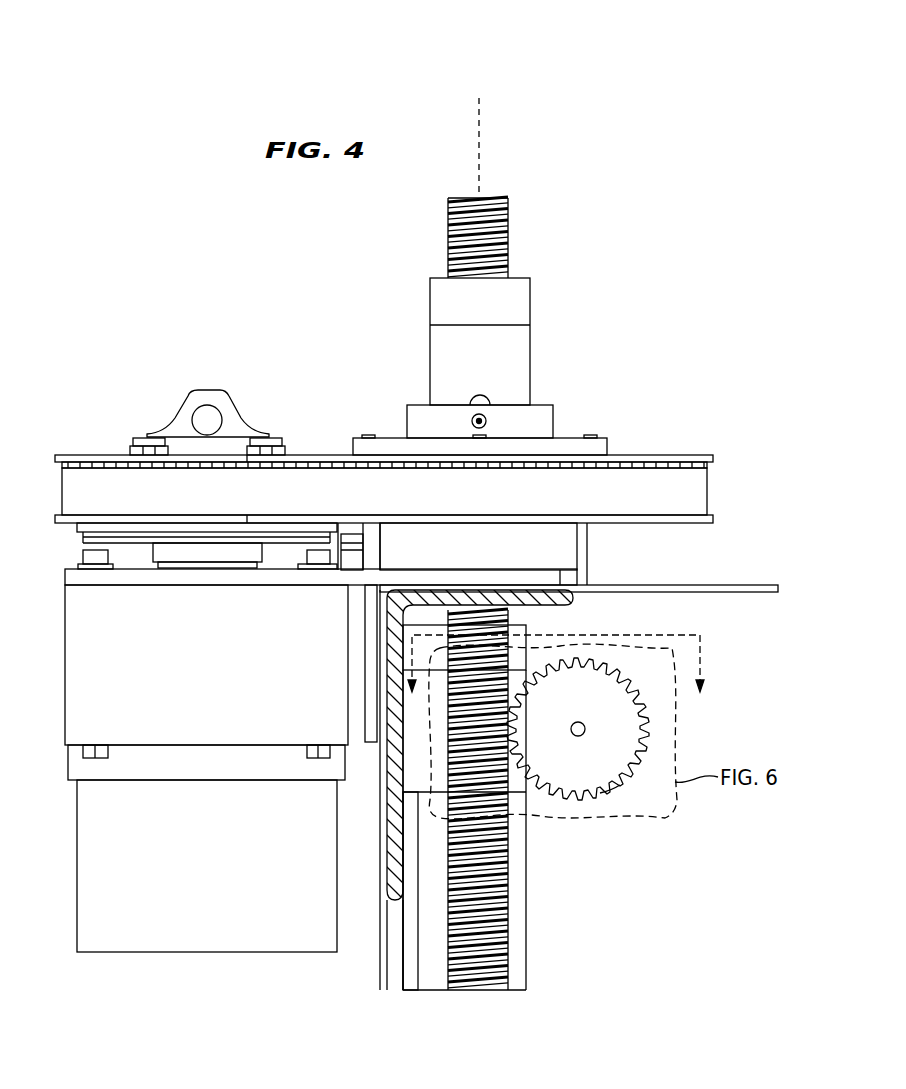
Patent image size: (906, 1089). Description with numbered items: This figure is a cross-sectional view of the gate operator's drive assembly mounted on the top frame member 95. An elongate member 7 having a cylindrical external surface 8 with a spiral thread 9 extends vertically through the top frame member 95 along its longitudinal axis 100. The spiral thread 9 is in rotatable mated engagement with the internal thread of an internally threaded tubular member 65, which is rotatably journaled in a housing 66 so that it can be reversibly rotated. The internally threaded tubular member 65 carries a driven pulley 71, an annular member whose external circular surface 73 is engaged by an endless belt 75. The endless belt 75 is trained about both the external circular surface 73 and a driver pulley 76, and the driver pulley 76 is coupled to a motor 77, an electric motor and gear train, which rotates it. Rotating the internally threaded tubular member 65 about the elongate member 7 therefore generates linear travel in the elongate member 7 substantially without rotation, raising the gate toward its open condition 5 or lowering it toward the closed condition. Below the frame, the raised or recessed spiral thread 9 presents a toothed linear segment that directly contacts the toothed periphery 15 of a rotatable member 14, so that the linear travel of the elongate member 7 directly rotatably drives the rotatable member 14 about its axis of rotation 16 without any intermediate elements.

The longitudinal axis 100 is at (479, 132).
The internally threaded tubular member 65 is at (530, 353).
The driver pulley 76 is at (102, 453).
The external circular surface 73 is at (703, 467).
The endless belt 75 is at (690, 505).
The driven pulley 71 is at (682, 455).
The housing 66 is at (565, 547).
The motor 77 is at (127, 646).
The top frame member 95 is at (768, 584).
The elongate member 7 is at (514, 880).
The external surface 8 is at (507, 952).
The spiral thread 9 is at (505, 928).
The open condition 5 is at (555, 676).
The rotatable member 14 is at (620, 743).
The axis of rotation 16 is at (582, 735).
The toothed periphery 15 is at (627, 787).